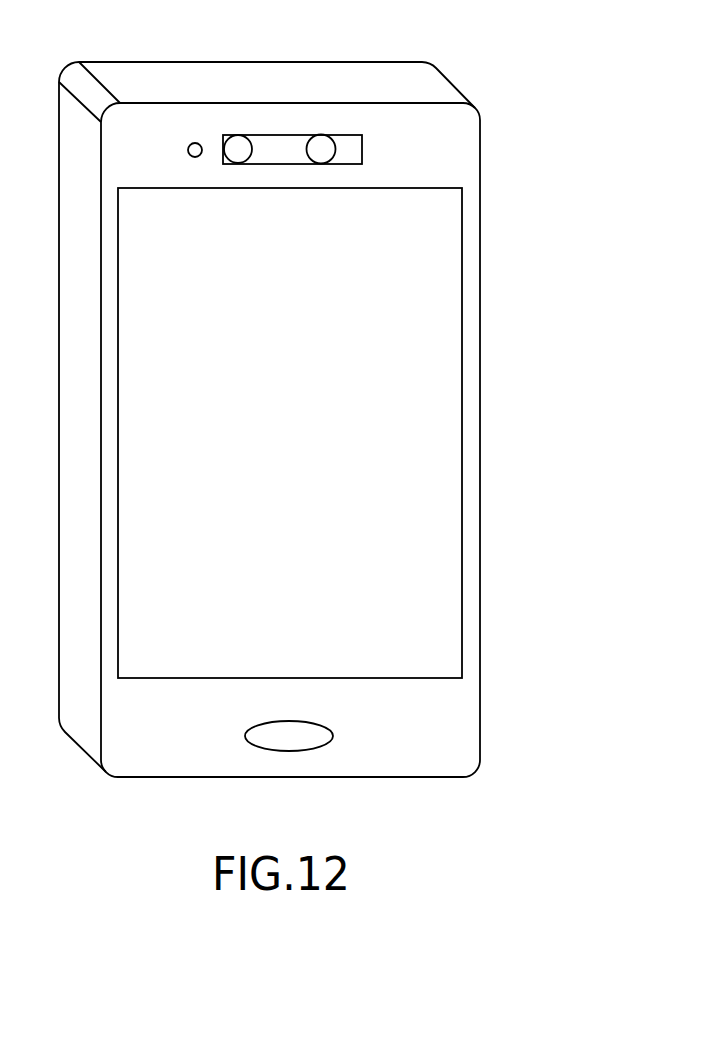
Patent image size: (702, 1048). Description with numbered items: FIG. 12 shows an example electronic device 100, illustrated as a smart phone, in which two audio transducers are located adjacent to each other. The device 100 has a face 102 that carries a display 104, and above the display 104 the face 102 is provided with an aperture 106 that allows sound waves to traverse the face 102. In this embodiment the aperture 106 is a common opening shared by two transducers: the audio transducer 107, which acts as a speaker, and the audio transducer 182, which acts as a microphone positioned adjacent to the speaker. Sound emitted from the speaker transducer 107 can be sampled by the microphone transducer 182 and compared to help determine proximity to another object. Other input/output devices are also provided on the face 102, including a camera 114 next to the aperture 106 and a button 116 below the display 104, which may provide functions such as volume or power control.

The electronic device 100 is at (539, 202).
The face 102 is at (480, 542).
The display 104 is at (461, 495).
The aperture 106 is at (365, 143).
The audio transducer (speaker) 107 is at (238, 135).
The audio transducer (microphone) 182 is at (321, 135).
The camera 114 is at (195, 143).
The button 116 is at (331, 731).